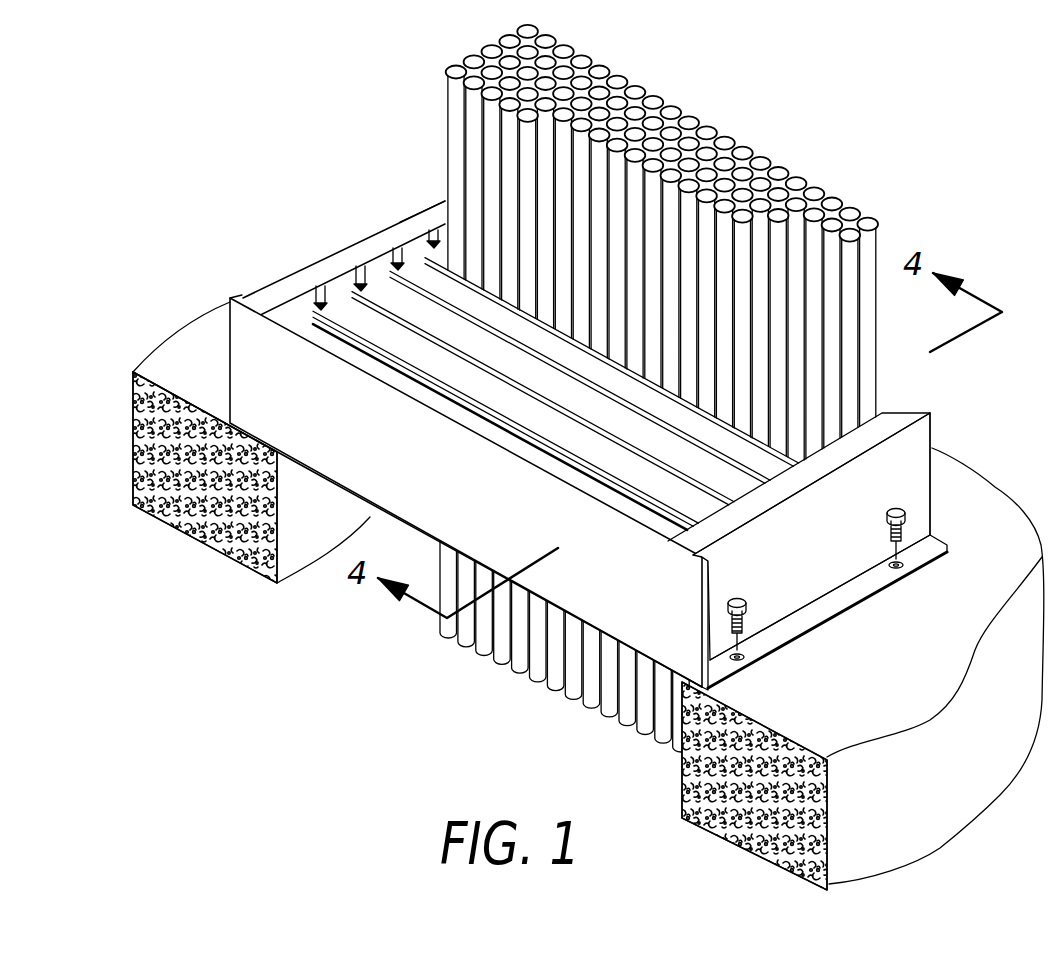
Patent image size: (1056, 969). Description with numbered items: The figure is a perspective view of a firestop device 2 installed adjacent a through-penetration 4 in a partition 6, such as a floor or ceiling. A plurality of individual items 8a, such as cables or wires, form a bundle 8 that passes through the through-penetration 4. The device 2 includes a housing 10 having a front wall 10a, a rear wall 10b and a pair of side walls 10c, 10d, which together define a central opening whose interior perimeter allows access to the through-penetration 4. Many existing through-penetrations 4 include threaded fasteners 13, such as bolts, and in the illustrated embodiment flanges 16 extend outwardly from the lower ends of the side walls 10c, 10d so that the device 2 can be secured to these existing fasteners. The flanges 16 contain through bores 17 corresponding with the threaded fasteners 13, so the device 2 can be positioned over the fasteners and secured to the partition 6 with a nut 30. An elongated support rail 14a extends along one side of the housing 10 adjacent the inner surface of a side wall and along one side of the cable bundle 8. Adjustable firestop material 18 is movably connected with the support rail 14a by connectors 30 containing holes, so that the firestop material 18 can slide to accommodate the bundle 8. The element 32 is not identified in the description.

The firestop device 2 is at (501, 351).
The through-penetration 4 is at (322, 590).
The partition 6 is at (193, 365).
The bundle 8 is at (447, 94).
The individual items 8a is at (687, 122).
The housing 10 is at (633, 447).
The front wall 10a is at (572, 593).
The rear wall 10b is at (888, 403).
The side wall 10c is at (438, 203).
The side wall 10d is at (893, 488).
The threaded fasteners 13 is at (748, 618).
The support rail 14a is at (350, 284).
The flanges 16 is at (934, 542).
The through bores 17 is at (900, 563).
The adjustable firestop material 18 is at (553, 422).
The nut 30 is at (747, 600).
The rail brackets 32 is at (352, 240).